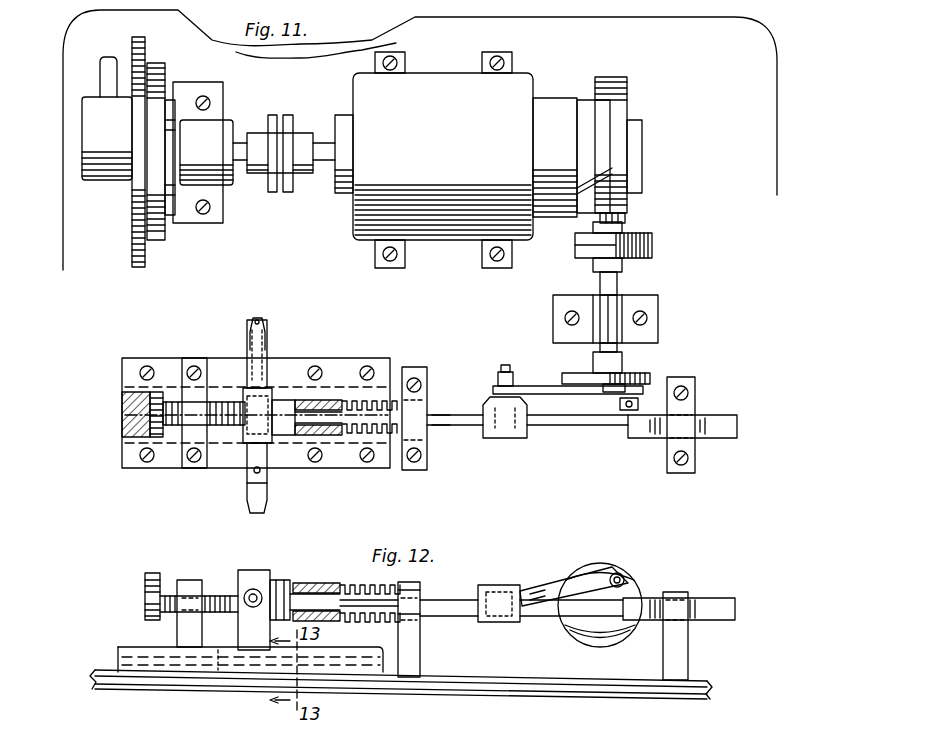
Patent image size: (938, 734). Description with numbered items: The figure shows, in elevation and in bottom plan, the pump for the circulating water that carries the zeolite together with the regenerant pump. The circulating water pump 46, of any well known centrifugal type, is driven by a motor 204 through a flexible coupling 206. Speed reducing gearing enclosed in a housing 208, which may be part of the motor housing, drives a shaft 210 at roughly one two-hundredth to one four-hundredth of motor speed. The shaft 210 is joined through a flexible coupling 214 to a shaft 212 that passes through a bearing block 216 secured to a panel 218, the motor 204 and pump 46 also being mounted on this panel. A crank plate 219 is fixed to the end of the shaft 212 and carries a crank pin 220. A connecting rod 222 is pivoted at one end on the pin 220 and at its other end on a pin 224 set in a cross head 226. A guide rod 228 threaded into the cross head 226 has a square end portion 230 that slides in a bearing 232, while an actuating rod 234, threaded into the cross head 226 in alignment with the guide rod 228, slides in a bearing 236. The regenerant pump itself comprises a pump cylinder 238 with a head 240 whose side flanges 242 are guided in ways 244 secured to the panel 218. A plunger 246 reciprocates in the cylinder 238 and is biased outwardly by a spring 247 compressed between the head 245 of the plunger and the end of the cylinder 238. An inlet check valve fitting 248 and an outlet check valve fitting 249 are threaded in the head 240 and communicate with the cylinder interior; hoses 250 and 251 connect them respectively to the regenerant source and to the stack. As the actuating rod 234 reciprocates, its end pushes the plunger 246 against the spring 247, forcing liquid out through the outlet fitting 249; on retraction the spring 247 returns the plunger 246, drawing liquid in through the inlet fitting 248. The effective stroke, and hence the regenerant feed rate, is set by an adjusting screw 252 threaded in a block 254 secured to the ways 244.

In FIG. 11, the circulating water pump 46 is at (110, 178).
In FIG. 11, the motor 204 is at (370, 202).
In FIG. 11, the flexible coupling 206 is at (290, 130).
In FIG. 11, the housing 208 is at (555, 215).
In FIG. 11, the shaft 210 is at (625, 220).
In FIG. 11, the shaft 212 is at (617, 286).
In FIG. 11, the flexible coupling 214 is at (652, 246).
In FIG. 11, the bearing block 216 is at (650, 317).
In FIG. 11, the panel 218 is at (545, 15).
In FIG. 12, the panel 218 is at (465, 690).
In FIG. 11, the crank plate 219 is at (600, 370).
In FIG. 12, the crank plate 219 is at (640, 590).
In FIG. 11, the crank pin 220 is at (622, 410).
In FIG. 12, the crank pin 220 is at (622, 574).
In FIG. 11, the connecting rod 222 is at (552, 386).
In FIG. 12, the connecting rod 222 is at (530, 590).
In FIG. 11, the pin 224 is at (505, 365).
In FIG. 11, the cross head 226 is at (520, 440).
In FIG. 12, the cross head 226 is at (500, 585).
In FIG. 11, the guide rod 228 is at (575, 427).
In FIG. 12, the guide rod 228 is at (600, 618).
In FIG. 11, the square end portion 230 is at (737, 430).
In FIG. 12, the square end portion 230 is at (722, 608).
In FIG. 11, the bearing 232 is at (695, 410).
In FIG. 12, the bearing 232 is at (688, 636).
In FIG. 11, the actuating rod 234 is at (460, 430).
In FIG. 12, the actuating rod 234 is at (455, 618).
In FIG. 11, the bearing 236 is at (425, 395).
In FIG. 12, the bearing 236 is at (410, 632).
In FIG. 11, the pump cylinder 238 is at (325, 440).
In FIG. 12, the pump cylinder 238 is at (310, 582).
In FIG. 11, the head 240 is at (280, 445).
In FIG. 12, the head 240 is at (250, 572).
In FIG. 11, the side flanges 242 is at (222, 372).
In FIG. 12, the side flanges 242 is at (218, 672).
In FIG. 11, the ways 244 is at (222, 348).
In FIG. 12, the ways 244 is at (160, 663).
In FIG. 12, the head 245 is at (408, 594).
In FIG. 11, the plunger 246 is at (420, 414).
In FIG. 12, the plunger 246 is at (372, 598).
In FIG. 11, the spring 247 is at (375, 398).
In FIG. 12, the spring 247 is at (378, 622).
In FIG. 11, the inlet check valve fitting 248 is at (248, 490).
In FIG. 12, the inlet check valve fitting 248 is at (262, 590).
In FIG. 11, the outlet check valve fitting 249 is at (282, 355).
In FIG. 11, the hose 250 is at (256, 513).
In FIG. 12, the hose 250 is at (258, 608).
In FIG. 11, the hose 251 is at (265, 322).
In FIG. 11, the adjusting screw 252 is at (155, 410).
In FIG. 12, the adjusting screw 252 is at (145, 592).
In FIG. 11, the block 254 is at (195, 468).
In FIG. 12, the block 254 is at (190, 580).